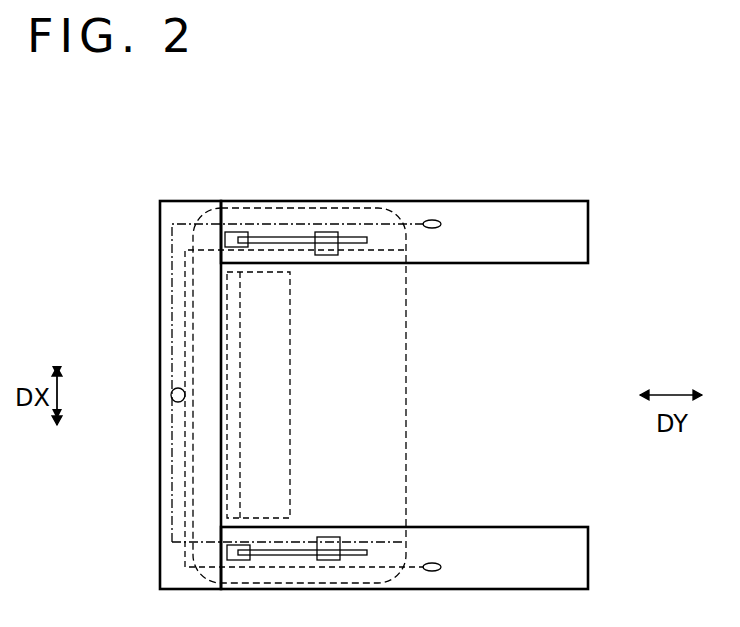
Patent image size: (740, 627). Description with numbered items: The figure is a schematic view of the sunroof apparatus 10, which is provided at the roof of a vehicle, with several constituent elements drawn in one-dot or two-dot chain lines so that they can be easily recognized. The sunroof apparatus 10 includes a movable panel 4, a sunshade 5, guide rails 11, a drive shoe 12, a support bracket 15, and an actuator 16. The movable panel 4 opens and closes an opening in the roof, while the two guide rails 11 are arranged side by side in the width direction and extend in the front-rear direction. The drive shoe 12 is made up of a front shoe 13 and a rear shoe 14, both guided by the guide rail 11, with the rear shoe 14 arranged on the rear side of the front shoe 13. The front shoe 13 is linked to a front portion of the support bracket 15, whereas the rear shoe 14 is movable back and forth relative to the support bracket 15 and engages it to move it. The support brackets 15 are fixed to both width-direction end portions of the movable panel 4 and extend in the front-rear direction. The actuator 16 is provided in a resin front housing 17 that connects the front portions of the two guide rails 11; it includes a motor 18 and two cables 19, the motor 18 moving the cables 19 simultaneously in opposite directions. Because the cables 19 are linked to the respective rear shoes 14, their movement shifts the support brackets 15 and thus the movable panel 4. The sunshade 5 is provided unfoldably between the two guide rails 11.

The sunroof apparatus 10 is at (354, 379).
The guide rail 11 is at (588, 226).
The movable panel 4 is at (406, 394).
The sunshade 5 is at (290, 414).
The drive shoe 12 is at (305, 360).
The front shoe 13 is at (245, 248).
The rear shoe 14 is at (328, 255).
The support bracket 15 is at (285, 237).
The actuator 16 is at (155, 350).
The front housing 17 is at (160, 267).
The motor 18 is at (183, 391).
The cable 19 is at (184, 452).